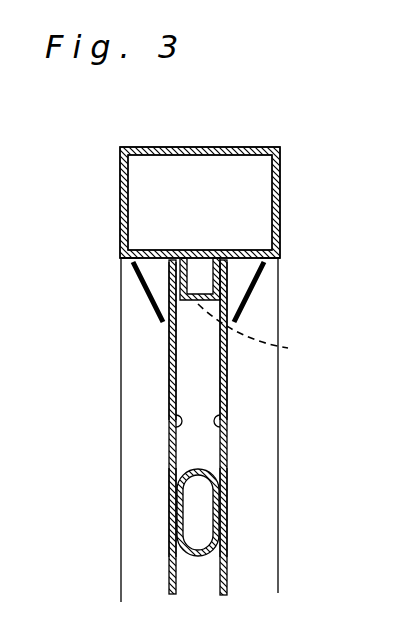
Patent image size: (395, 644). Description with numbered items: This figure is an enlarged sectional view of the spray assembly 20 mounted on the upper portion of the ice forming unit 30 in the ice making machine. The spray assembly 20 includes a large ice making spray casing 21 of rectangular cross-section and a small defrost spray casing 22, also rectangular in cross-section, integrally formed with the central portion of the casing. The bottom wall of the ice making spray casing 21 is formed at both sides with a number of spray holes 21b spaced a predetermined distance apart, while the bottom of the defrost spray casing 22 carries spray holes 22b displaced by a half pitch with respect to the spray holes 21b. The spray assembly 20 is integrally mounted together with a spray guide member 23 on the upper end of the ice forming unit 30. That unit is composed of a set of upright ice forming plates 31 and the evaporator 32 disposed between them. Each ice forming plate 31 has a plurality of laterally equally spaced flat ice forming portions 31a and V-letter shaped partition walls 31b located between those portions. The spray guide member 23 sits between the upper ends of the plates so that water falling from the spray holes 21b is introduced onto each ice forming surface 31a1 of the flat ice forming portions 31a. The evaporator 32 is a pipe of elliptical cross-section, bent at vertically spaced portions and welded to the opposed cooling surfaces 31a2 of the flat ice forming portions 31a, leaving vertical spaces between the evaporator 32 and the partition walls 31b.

The spray assembly 20 is at (278, 146).
The ice making spray casing 21 is at (120, 197).
The spray holes 21b is at (137, 269).
The defrost spray casing 22 is at (200, 258).
The spray holes 22b is at (266, 330).
The spray guide member 23 is at (150, 300).
The ice forming unit 30 is at (168, 362).
The ice forming plates 31 is at (169, 484).
The flat ice forming portions 31a is at (169, 513).
The ice forming surface 31a1 is at (169, 395).
The cooling surfaces 31a2 is at (169, 431).
The partition walls 31b is at (119, 578).
The evaporator 32 is at (228, 464).